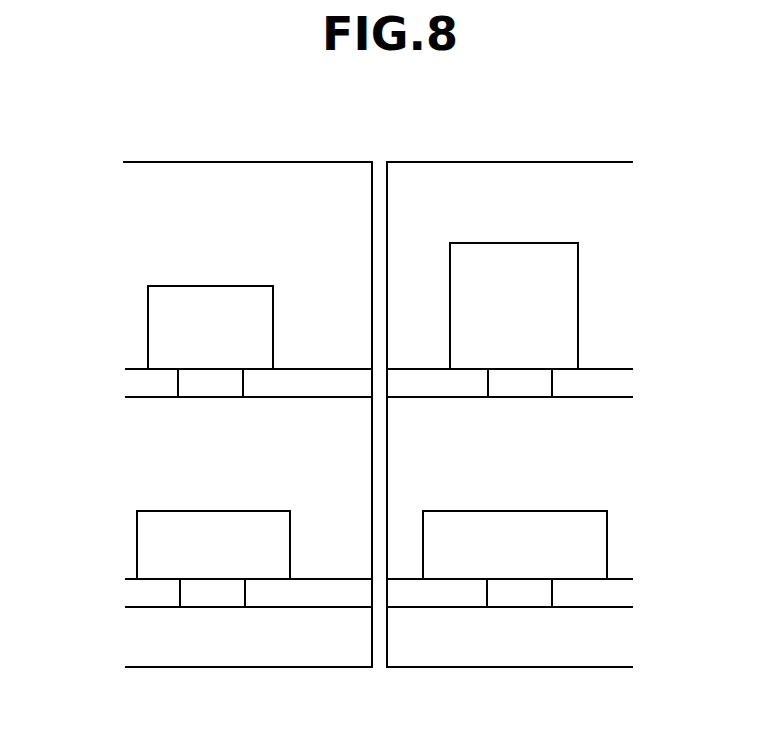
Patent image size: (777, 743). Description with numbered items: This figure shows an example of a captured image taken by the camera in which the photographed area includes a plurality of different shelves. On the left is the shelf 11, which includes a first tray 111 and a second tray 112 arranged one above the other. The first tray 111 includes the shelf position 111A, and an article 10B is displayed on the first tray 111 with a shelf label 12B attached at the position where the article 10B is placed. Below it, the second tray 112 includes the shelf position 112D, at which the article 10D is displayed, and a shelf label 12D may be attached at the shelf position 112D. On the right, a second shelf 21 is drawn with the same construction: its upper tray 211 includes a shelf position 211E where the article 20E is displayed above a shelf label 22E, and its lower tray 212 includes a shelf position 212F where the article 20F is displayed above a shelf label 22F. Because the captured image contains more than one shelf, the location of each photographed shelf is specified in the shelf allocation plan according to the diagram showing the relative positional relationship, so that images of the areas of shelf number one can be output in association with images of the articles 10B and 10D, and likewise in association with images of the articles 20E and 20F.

The shelf 11 is at (344, 156).
The second substrate 21 is at (619, 156).
The article 10B is at (165, 317).
The first tray 111 is at (140, 382).
The shelf position 111A is at (138, 368).
The shelf label 12B is at (207, 390).
The article 20E is at (558, 313).
The second wiring layer 211 is at (627, 386).
The surface of second wiring layer 211E is at (615, 368).
The second conductive via 22E is at (520, 387).
The article 10D is at (150, 532).
The second tray 112 is at (140, 597).
The shelf position 112D is at (129, 578).
The shelf label 12D is at (212, 602).
The article 20F is at (588, 540).
The fourth wiring layer 212 is at (625, 596).
The surface of fourth wiring layer 212F is at (617, 578).
The fourth conductive via 22F is at (523, 601).